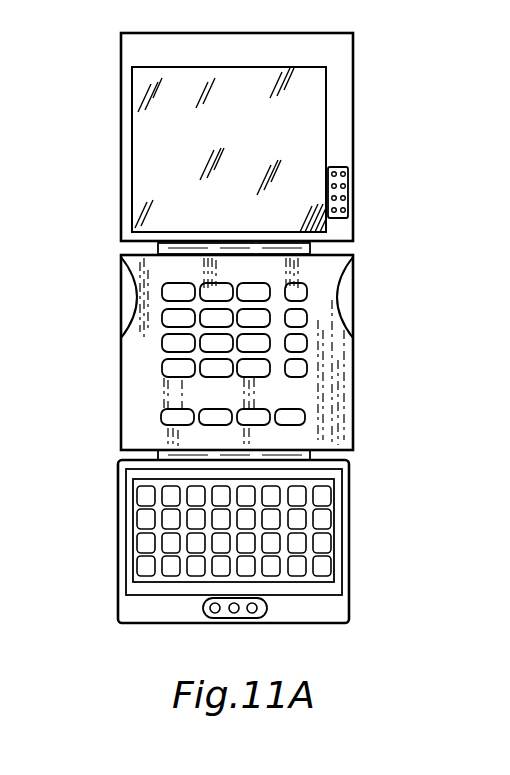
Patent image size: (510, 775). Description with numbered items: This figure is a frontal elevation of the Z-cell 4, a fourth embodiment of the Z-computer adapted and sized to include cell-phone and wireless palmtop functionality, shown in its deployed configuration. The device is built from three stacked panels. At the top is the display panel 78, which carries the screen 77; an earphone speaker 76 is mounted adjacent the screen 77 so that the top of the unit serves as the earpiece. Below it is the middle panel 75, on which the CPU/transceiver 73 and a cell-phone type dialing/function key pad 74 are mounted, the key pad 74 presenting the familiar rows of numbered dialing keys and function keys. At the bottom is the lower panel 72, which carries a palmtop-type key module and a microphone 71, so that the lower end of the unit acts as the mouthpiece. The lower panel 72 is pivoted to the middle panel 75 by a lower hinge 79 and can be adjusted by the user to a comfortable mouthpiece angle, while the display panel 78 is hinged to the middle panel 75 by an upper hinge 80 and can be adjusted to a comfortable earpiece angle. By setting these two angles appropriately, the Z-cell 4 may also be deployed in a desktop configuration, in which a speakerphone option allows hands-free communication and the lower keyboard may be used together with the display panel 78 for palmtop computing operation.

The Z-cell 4 is at (80, 214).
The microphone 71 is at (219, 615).
The lower panel 72 is at (118, 543).
The CPU/transceiver 73 is at (326, 387).
The dialing/function key pad 74 is at (151, 399).
The middle panel 75 is at (121, 354).
The earphone speaker 76 is at (348, 207).
The screen 77 is at (180, 157).
The display panel 78 is at (353, 92).
The lower hinge 79 is at (318, 456).
The upper hinge 80 is at (212, 246).